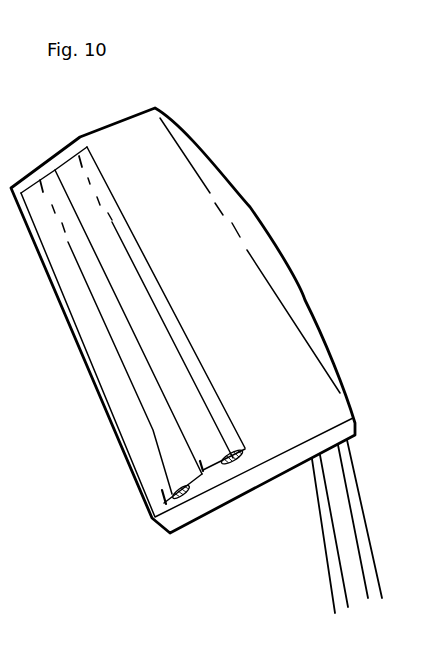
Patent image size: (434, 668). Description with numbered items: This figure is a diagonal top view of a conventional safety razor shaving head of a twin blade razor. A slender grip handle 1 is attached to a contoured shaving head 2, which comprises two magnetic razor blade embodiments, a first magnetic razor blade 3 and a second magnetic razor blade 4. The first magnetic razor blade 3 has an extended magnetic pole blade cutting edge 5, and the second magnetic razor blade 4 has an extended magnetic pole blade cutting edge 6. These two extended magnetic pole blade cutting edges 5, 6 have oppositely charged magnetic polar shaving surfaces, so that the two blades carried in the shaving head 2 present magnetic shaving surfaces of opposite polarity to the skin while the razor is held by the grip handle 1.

The slender grip handle 1 is at (347, 533).
The contoured shaving head 2 is at (190, 190).
The magnetic razor blade 3 is at (163, 487).
The magnetic razor blade 4 is at (208, 442).
The extended magnetic pole blade cutting edge 5 is at (97, 340).
The extended magnetic pole blade cutting edge 6 is at (68, 172).